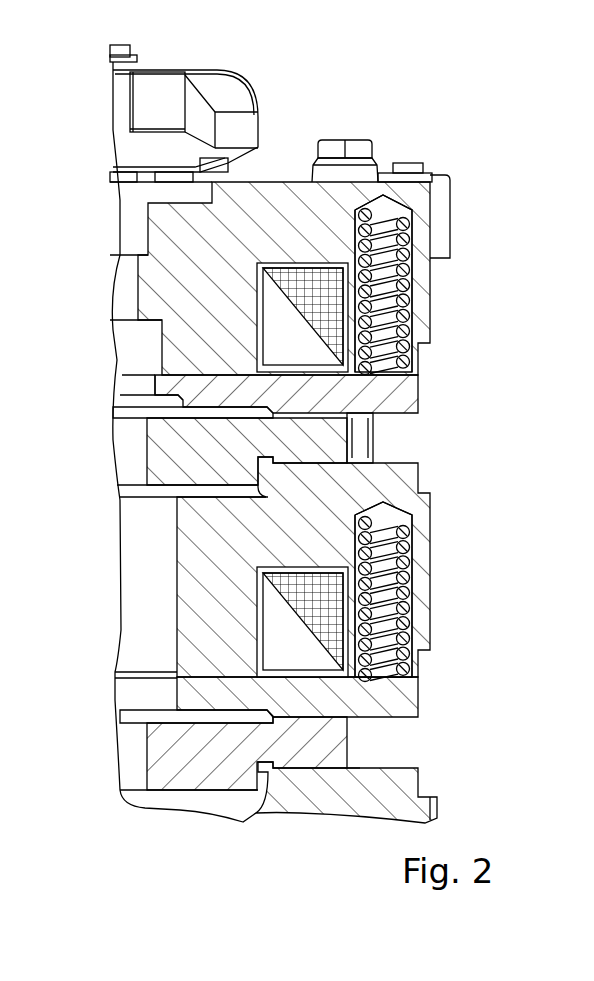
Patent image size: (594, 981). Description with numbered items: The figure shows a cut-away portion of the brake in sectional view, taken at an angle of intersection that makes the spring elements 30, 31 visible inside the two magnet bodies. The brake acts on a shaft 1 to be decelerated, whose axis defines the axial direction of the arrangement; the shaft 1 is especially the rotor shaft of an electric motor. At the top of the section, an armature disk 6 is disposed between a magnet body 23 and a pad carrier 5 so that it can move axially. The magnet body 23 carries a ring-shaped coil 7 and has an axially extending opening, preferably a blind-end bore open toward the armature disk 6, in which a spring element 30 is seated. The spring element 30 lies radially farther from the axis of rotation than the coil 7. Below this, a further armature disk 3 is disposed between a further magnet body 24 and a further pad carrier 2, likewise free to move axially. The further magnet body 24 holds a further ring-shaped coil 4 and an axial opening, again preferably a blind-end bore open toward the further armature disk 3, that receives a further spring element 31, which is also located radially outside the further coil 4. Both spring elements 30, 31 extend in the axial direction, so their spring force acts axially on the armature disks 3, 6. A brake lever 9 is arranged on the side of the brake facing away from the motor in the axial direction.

The shaft 1 is at (138, 458).
The further pad carrier 2 is at (312, 743).
The further armature disk 3 is at (365, 703).
The further ring-shaped coil 4 is at (318, 611).
The pad carrier 5 is at (296, 442).
The armature disk 6 is at (367, 402).
The ring-shaped coil 7 is at (323, 302).
The brake lever 9 is at (222, 93).
The magnet body 23 is at (268, 222).
The further magnet body 24 is at (305, 498).
The spring element 30 is at (390, 233).
The further spring element 31 is at (386, 565).